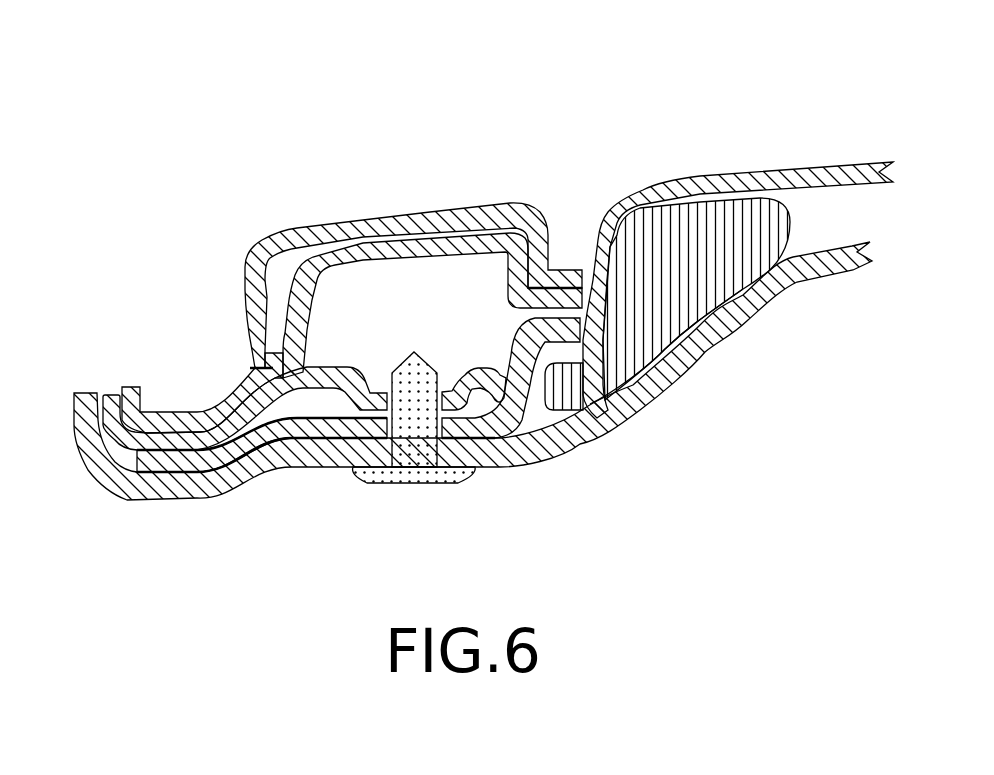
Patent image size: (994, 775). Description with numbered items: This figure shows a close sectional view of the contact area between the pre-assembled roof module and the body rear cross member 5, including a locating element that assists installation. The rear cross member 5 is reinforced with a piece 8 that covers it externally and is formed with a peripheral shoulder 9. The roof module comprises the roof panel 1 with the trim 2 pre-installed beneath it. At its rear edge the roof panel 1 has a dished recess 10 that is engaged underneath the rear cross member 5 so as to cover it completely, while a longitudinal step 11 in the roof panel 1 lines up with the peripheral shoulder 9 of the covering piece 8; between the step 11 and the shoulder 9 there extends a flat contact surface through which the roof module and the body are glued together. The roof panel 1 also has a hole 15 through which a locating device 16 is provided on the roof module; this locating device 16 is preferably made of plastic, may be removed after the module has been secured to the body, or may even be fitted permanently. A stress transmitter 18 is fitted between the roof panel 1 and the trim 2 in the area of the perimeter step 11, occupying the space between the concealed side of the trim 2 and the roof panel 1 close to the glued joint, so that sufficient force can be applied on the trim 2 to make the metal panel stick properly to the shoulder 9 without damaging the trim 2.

The roof panel 1 is at (816, 176).
The trim 2 is at (783, 268).
The rear cross member 5 is at (256, 368).
The piece 8 is at (388, 228).
The peripheral shoulder 9 is at (563, 275).
The dished recess 10 is at (337, 430).
The longitudinal step 11 is at (563, 353).
The hole 15 is at (386, 440).
The locating device 16 is at (445, 473).
The stress transmitter 18 is at (712, 225).